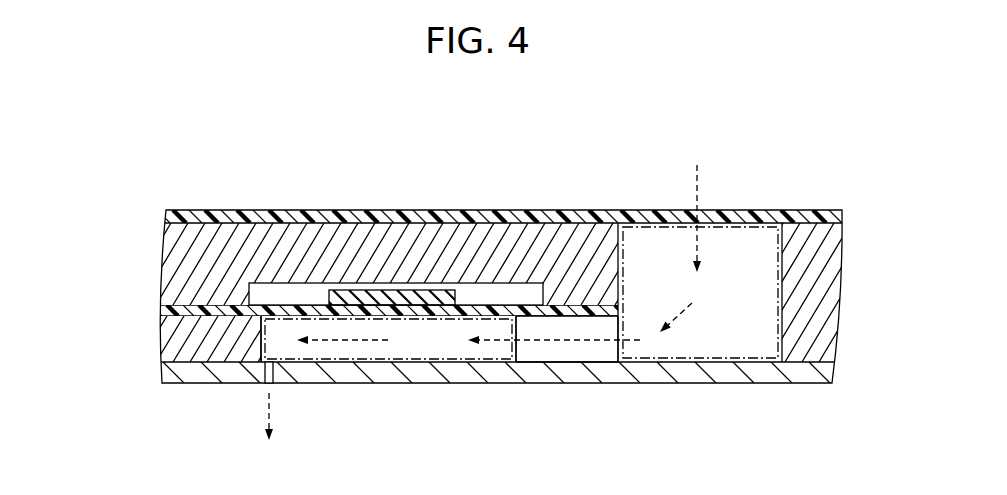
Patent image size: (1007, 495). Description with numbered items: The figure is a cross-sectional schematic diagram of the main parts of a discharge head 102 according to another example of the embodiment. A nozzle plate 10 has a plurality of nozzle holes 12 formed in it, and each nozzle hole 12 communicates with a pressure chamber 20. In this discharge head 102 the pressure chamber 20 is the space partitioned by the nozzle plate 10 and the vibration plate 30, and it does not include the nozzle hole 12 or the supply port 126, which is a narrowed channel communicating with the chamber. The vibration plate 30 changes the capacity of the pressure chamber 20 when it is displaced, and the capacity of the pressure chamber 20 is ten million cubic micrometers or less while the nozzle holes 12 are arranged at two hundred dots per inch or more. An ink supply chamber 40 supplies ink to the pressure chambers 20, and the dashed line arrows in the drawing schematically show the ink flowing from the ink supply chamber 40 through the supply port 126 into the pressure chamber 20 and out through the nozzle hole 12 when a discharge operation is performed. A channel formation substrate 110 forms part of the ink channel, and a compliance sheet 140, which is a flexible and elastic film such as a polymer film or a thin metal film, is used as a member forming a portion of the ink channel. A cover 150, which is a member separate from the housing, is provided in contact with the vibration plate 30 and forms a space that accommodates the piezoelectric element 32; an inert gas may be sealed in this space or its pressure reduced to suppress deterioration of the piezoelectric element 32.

The nozzle plate 10 is at (192, 373).
The nozzle hole 12 is at (260, 383).
The pressure chamber 20 is at (420, 343).
The vibration plate 30 is at (170, 312).
The piezoelectric element 32 is at (362, 297).
The ink supply chamber 40 is at (735, 255).
The discharge head 102 is at (781, 129).
The channel formation substrate 110 is at (173, 340).
The supply port 126 is at (563, 350).
The compliance sheet 140 is at (650, 220).
The cover 150 is at (257, 237).